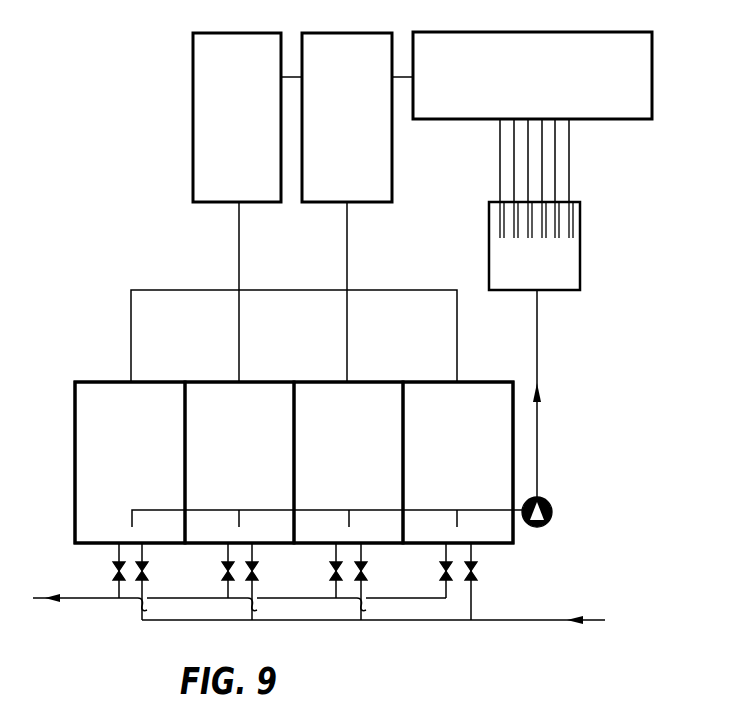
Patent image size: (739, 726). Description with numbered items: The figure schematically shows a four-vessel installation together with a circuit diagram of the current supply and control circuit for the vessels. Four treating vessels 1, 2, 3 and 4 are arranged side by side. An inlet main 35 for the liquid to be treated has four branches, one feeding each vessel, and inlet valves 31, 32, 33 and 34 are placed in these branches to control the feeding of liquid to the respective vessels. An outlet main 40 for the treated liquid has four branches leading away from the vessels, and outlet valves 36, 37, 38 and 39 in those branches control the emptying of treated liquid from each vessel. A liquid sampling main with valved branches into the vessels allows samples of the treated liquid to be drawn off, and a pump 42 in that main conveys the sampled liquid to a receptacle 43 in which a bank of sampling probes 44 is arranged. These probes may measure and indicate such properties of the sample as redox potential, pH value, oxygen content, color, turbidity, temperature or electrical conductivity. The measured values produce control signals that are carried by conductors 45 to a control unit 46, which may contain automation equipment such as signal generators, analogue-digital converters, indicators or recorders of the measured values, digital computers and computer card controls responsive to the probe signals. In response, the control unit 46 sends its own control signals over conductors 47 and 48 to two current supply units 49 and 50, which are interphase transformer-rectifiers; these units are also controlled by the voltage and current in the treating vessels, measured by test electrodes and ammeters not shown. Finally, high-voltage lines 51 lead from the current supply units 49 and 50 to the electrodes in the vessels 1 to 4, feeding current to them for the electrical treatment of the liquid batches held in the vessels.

The treating vessel 1 is at (95, 397).
The treating vessel 2 is at (207, 397).
The treating vessel 3 is at (317, 397).
The treating vessel 4 is at (419, 397).
The inlet valve 31 is at (148, 571).
The inlet valve 32 is at (258, 571).
The inlet valve 33 is at (367, 571).
The inlet valve 34 is at (477, 571).
The inlet main 35 is at (548, 618).
The outlet valve 36 is at (112, 571).
The outlet valve 37 is at (222, 571).
The outlet valve 38 is at (330, 571).
The outlet valve 39 is at (440, 571).
The outlet main 40 is at (72, 598).
The pump 42 is at (543, 497).
The receptacle 43 is at (513, 272).
The sampling probes 44 is at (547, 232).
The conductors 45 is at (502, 145).
The control unit 46 is at (623, 105).
The conductor 47 is at (397, 77).
The conductor 48 is at (298, 77).
The current supply unit 49 is at (372, 185).
The current supply unit 50 is at (217, 183).
The high-voltage lines 51 is at (383, 290).